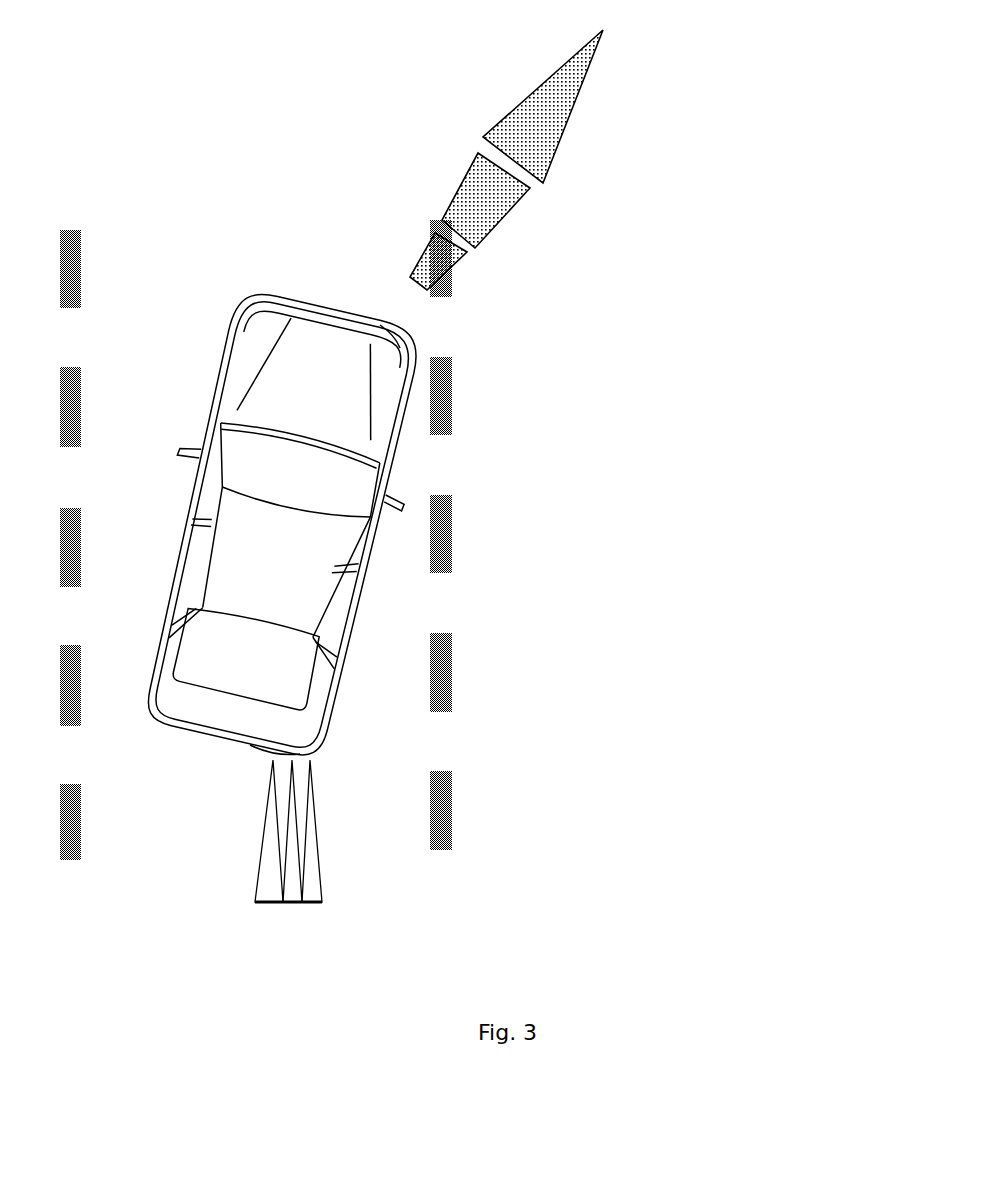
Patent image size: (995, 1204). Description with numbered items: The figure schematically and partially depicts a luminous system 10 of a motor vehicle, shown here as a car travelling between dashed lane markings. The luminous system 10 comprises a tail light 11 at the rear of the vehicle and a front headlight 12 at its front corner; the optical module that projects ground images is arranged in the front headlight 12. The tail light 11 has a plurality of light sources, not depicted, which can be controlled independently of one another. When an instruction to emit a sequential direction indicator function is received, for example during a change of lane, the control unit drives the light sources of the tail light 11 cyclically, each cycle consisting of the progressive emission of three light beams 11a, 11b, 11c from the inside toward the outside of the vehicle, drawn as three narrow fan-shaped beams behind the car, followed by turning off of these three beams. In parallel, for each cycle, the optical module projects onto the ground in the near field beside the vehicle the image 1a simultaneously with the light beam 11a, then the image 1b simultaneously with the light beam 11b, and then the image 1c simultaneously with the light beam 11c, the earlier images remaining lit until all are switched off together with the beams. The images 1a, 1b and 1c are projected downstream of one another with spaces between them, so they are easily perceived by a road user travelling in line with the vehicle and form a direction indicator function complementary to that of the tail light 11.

The image of the junction face of the lower light guide 1a is at (447, 265).
The image of the junction face of the central light guide 1b is at (497, 207).
The image of the junction face of the upper light guide 1c is at (557, 125).
The luminous system 10 is at (212, 228).
The tail light 11 is at (253, 753).
The first light beam 11a is at (257, 903).
The second light beam 11b is at (292, 903).
The third light beam 11c is at (317, 903).
The front headlight 12 is at (387, 333).